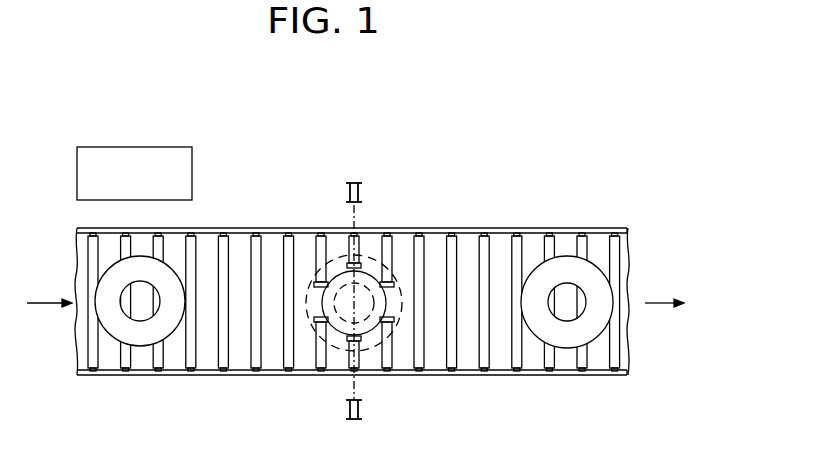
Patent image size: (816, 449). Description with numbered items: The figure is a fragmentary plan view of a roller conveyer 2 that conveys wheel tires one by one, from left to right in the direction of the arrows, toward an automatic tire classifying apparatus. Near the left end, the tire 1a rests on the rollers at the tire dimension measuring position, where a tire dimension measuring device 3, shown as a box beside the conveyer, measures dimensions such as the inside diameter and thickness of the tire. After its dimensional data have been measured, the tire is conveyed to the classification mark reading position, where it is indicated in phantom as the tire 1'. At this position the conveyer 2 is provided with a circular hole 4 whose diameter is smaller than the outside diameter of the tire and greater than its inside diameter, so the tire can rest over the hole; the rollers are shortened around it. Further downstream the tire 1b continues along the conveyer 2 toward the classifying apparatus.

The tire 1a is at (145, 346).
The tire 1b is at (567, 349).
The tire at classification mark reading position 1' is at (341, 341).
The conveyer 2 is at (242, 375).
The tire dimension measuring device 3 is at (150, 147).
The circular hole 4 is at (340, 325).